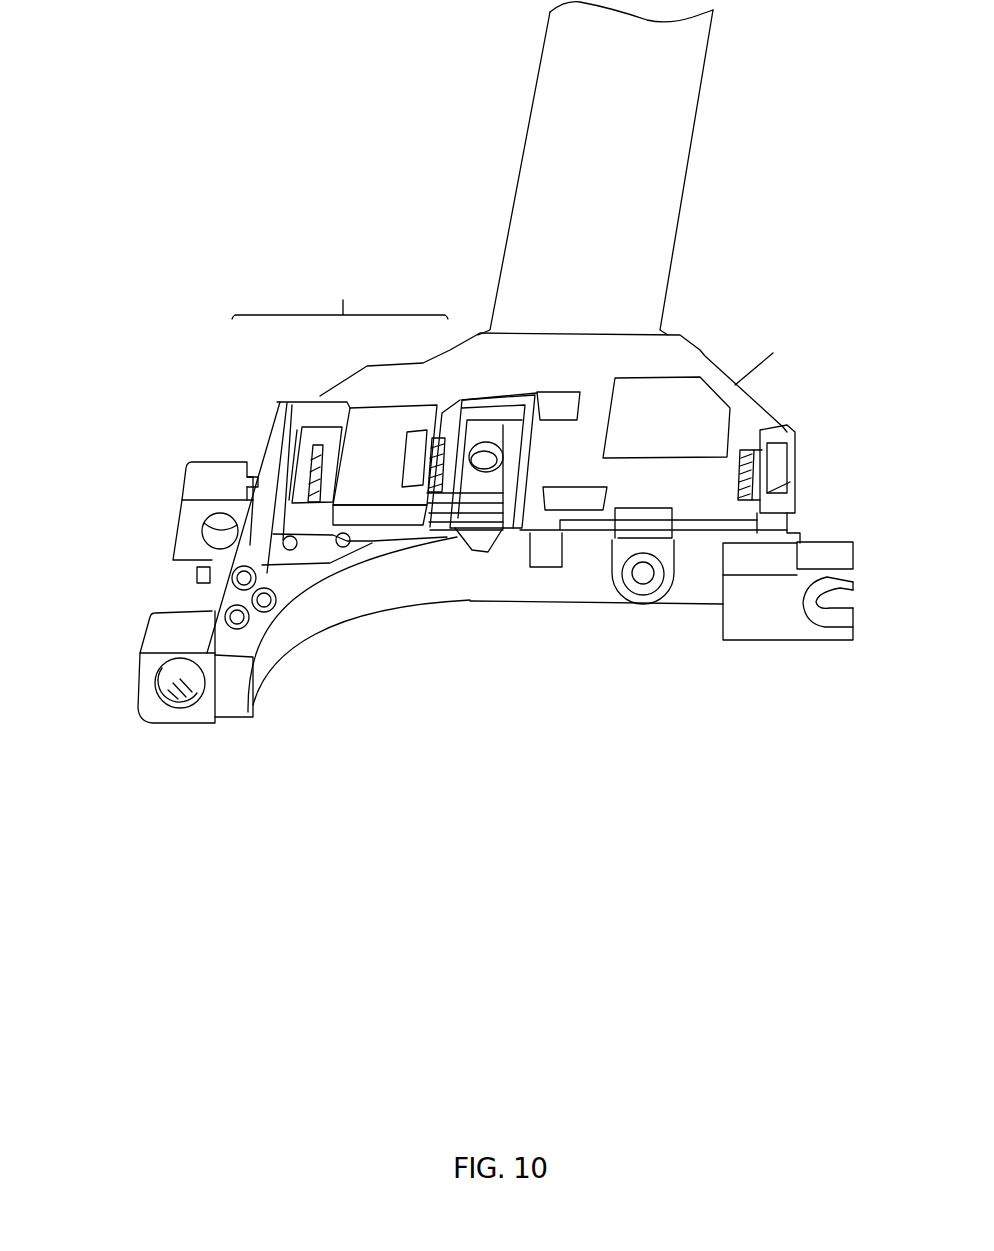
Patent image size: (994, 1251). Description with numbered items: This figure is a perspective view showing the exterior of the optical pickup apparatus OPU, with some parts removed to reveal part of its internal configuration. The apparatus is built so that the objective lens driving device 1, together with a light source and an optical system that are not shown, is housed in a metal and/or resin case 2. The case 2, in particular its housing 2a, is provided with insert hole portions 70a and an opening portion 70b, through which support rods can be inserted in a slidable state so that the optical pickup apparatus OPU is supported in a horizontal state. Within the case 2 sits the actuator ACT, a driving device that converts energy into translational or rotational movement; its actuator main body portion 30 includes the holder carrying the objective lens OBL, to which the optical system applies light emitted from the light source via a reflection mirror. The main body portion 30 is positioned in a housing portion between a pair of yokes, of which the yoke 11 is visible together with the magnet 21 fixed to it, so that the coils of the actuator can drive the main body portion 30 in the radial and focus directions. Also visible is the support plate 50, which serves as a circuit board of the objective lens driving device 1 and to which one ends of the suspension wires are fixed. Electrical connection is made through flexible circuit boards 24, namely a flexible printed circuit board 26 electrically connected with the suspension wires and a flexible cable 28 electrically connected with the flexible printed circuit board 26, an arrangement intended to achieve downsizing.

The optical pickup apparatus OPU is at (160, 300).
The objective lens driving device 1 is at (340, 344).
The support plate 50 is at (292, 400).
The yoke 11 is at (387, 408).
The magnet 21 is at (455, 428).
The objective lens OBL is at (487, 455).
The flexible cable 28 is at (676, 186).
The flexible circuit boards 24 is at (770, 172).
The flexible printed circuit board 26 is at (668, 398).
The case 2 is at (787, 430).
The insert hole portions 70a is at (190, 555).
The opening portion 70b is at (850, 585).
The actuator ACT is at (448, 547).
The actuator main body portion 30 is at (547, 555).
The housing 2a is at (293, 643).